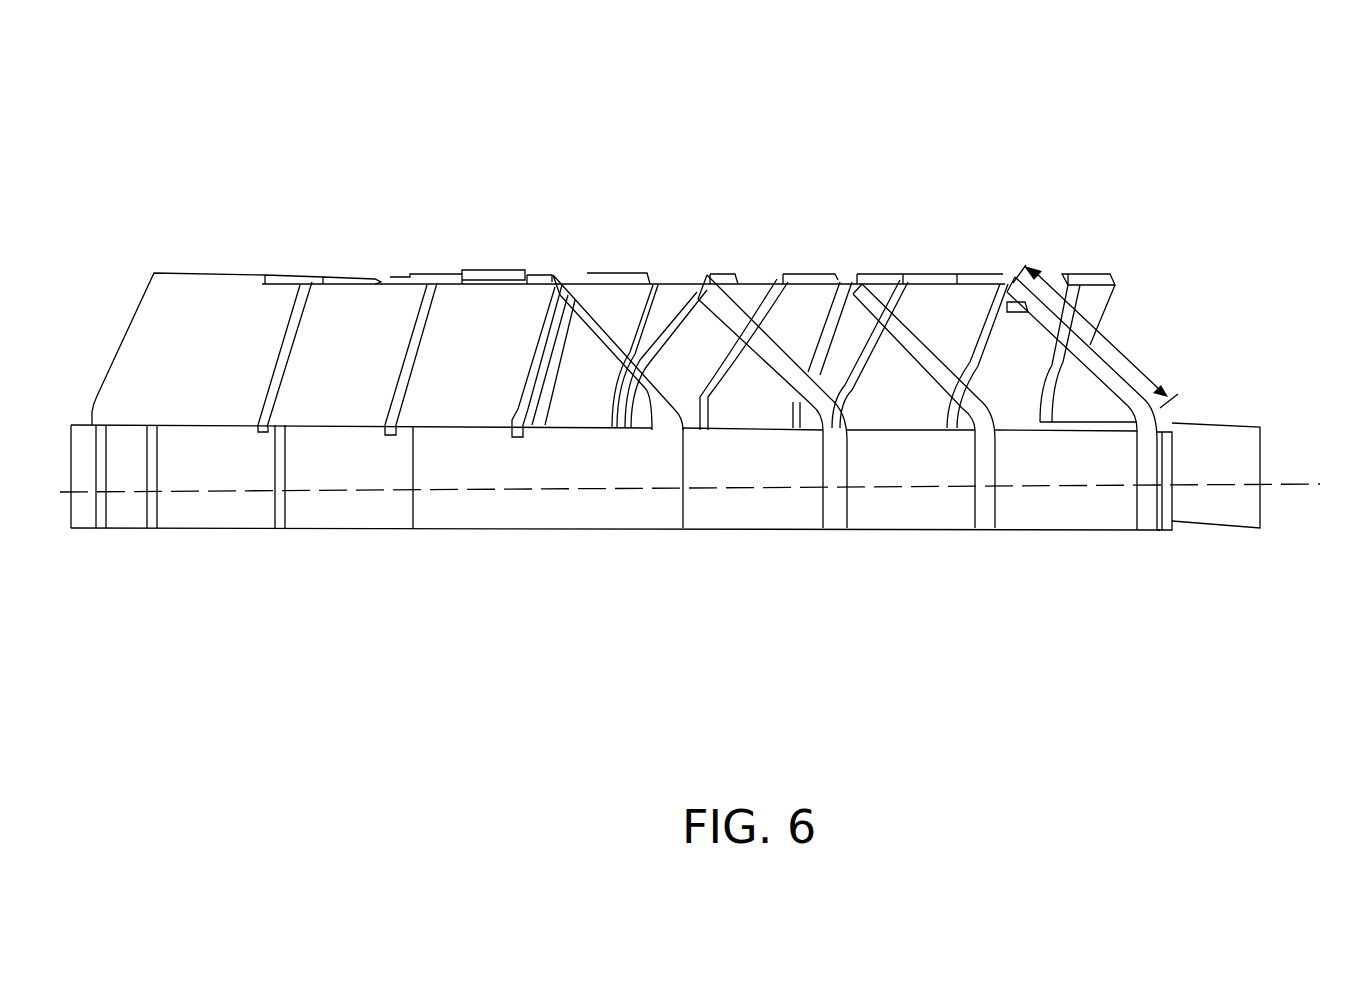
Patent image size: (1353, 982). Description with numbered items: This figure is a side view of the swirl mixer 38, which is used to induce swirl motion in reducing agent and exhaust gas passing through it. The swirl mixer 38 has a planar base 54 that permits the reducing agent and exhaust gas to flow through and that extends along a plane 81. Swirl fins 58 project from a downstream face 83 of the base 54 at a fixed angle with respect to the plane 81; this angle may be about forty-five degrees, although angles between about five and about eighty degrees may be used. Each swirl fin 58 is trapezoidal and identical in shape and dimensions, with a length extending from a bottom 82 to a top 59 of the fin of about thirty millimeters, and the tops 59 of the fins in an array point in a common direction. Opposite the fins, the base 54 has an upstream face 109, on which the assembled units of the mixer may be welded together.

The swirl mixer 38 is at (1146, 112).
The base 54 is at (1038, 513).
The swirl fin 58 is at (912, 342).
The top 59 is at (1012, 288).
The plane 81 is at (1275, 480).
The bottom 82 is at (1152, 423).
The downstream face 83 is at (453, 425).
The upstream face 109 is at (458, 528).